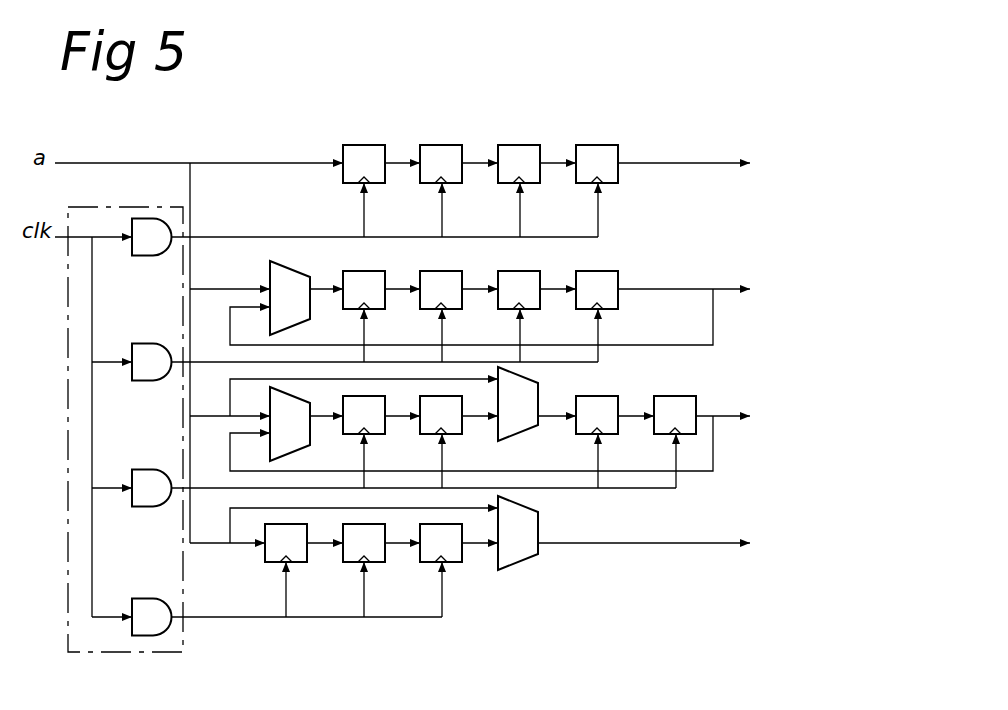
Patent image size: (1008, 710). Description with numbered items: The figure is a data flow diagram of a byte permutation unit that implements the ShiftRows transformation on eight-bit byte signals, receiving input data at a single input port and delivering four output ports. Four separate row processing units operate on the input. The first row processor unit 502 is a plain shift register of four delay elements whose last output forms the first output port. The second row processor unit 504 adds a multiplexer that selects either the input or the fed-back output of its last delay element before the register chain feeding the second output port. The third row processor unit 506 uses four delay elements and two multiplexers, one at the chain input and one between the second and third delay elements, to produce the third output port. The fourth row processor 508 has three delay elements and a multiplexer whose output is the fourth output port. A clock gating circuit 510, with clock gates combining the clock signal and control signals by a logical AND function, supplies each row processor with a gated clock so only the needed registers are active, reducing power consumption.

The first row processor unit 502 is at (813, 143).
The second row processor unit 504 is at (813, 269).
The third row processor unit 506 is at (813, 395).
The fourth row processor 508 is at (813, 522).
The clock gating circuit 510 is at (147, 643).